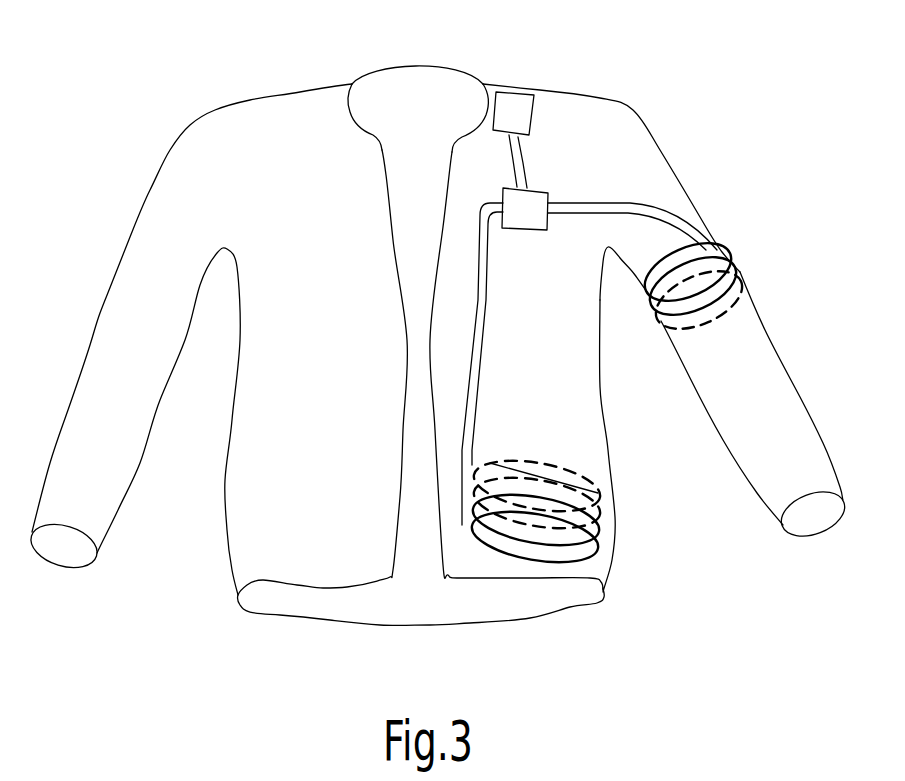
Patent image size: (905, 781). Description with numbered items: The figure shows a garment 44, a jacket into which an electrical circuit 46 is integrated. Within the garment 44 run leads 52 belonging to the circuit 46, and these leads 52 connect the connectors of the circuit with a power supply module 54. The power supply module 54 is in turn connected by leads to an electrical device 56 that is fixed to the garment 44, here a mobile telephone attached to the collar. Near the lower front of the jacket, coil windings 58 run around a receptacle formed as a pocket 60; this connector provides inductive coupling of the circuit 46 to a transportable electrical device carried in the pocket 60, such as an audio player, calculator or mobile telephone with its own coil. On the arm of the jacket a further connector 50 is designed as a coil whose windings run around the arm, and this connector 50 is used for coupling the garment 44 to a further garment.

The garment 44 is at (228, 566).
The electrical circuit 46 is at (638, 95).
The connector 50 is at (733, 262).
The leads 52 is at (612, 203).
The power supply module 54 is at (535, 232).
The electrical device 56 is at (515, 103).
The coil windings 58 is at (470, 535).
The pocket 60 is at (527, 560).